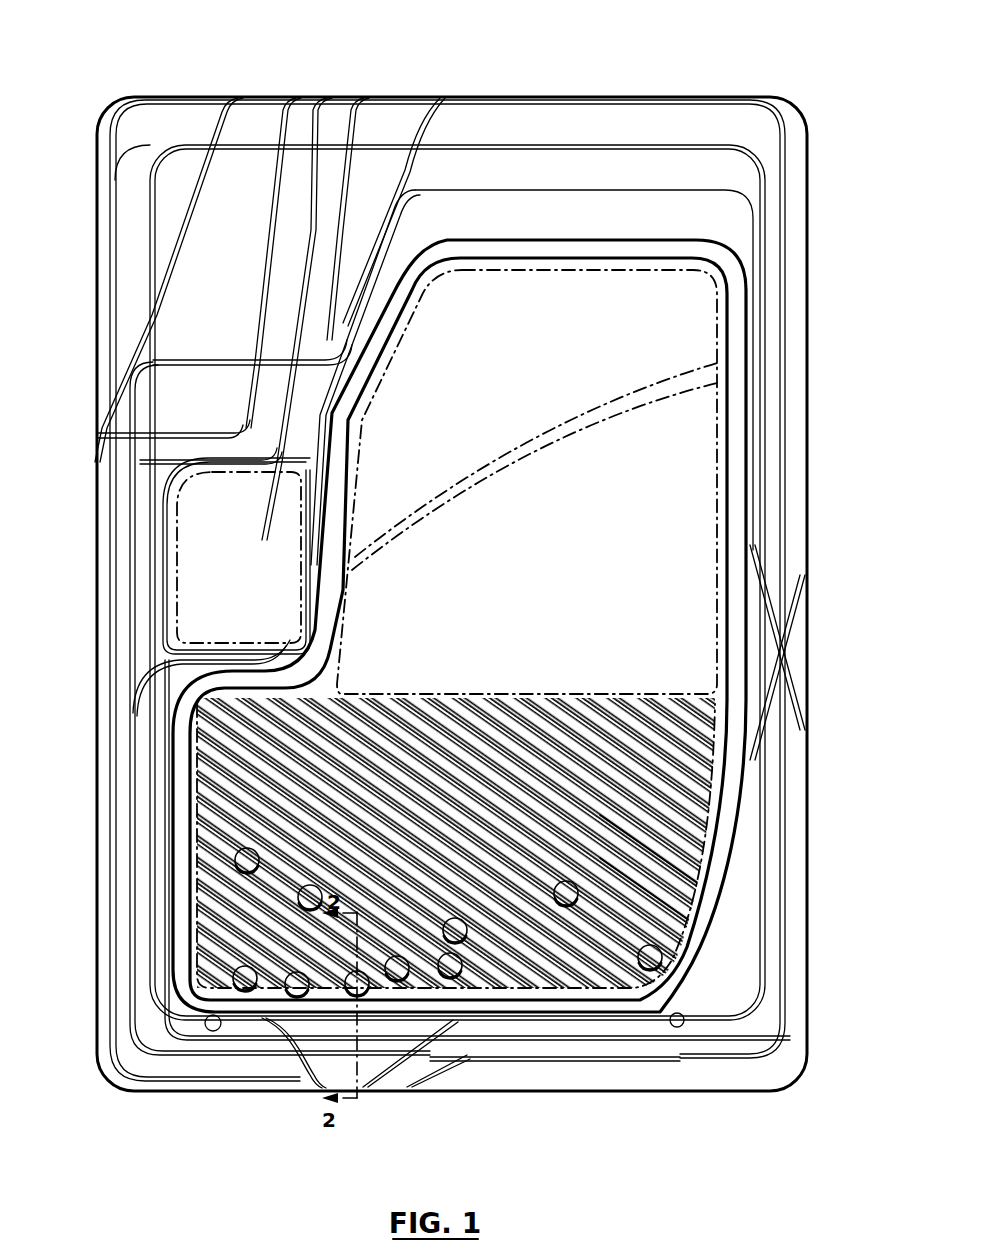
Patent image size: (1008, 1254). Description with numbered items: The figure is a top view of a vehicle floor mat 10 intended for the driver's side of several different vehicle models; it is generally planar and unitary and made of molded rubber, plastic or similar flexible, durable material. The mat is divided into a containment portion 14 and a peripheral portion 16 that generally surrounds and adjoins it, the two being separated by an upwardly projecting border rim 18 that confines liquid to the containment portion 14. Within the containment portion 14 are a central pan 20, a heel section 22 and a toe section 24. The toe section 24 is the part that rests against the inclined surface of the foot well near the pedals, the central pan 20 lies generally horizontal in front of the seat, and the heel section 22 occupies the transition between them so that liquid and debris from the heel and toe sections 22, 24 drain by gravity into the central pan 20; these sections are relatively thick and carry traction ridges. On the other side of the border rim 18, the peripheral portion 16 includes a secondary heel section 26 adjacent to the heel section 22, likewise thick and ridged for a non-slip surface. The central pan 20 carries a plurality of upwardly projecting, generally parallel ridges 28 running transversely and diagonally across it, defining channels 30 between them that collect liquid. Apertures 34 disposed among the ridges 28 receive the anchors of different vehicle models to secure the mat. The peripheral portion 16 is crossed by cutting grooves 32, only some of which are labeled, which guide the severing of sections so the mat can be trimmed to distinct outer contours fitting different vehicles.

The vehicle floor mat 10 is at (758, 82).
The containment portion 14 is at (678, 327).
The peripheral portion 16 is at (797, 164).
The border rim 18 is at (740, 357).
The central pan 20 is at (719, 733).
The heel section 22 is at (718, 463).
The toe section 24 is at (720, 318).
The secondary heel section 26 is at (177, 533).
The ridges 28 is at (704, 812).
The channels 30 is at (671, 857).
The cutting grooves 32 is at (268, 183).
The apertures 34 is at (466, 945).